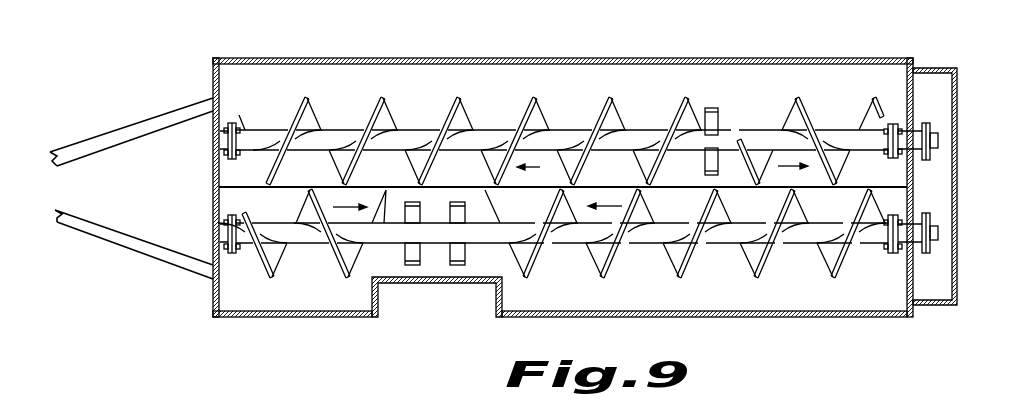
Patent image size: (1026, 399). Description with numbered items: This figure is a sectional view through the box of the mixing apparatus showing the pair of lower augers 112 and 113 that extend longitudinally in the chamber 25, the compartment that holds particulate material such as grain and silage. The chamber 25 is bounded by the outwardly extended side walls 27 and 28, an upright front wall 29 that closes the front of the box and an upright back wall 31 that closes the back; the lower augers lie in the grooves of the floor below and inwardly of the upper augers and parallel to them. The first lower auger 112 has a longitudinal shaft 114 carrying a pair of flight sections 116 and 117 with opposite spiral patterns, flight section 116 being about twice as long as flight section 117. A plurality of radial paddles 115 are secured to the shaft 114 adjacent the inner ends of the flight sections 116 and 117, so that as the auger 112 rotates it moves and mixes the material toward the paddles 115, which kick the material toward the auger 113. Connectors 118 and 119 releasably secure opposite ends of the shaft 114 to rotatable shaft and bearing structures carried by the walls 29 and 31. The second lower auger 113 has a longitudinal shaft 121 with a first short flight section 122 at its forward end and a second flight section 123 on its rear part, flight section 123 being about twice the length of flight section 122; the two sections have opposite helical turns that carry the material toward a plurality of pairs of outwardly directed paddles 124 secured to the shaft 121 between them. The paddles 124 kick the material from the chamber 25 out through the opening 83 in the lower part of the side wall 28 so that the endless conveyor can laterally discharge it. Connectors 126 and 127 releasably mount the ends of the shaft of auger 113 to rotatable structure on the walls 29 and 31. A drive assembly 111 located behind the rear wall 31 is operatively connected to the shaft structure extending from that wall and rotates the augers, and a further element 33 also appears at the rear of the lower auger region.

The chamber 25 is at (530, 192).
The side wall 27 is at (736, 57).
The side wall 28 is at (780, 318).
The front wall 29 is at (212, 80).
The back wall 31 is at (905, 176).
The lower auger flight 33 is at (853, 262).
The opening 83 is at (388, 295).
The drive assembly 111 is at (941, 55).
The lower auger 112 is at (476, 108).
The second lower auger 113 is at (583, 260).
The shaft 114 is at (413, 137).
The radial paddles 115 is at (712, 122).
The flight section 116 is at (318, 108).
The flight section 117 is at (788, 112).
The connector 118 is at (233, 110).
The connector 119 is at (892, 112).
The shaft 121 is at (800, 233).
The first short flight section 122 is at (282, 258).
The second flight section 123 is at (668, 258).
The paddles 124 is at (410, 252).
The connector 126 is at (229, 263).
The connector 127 is at (892, 262).